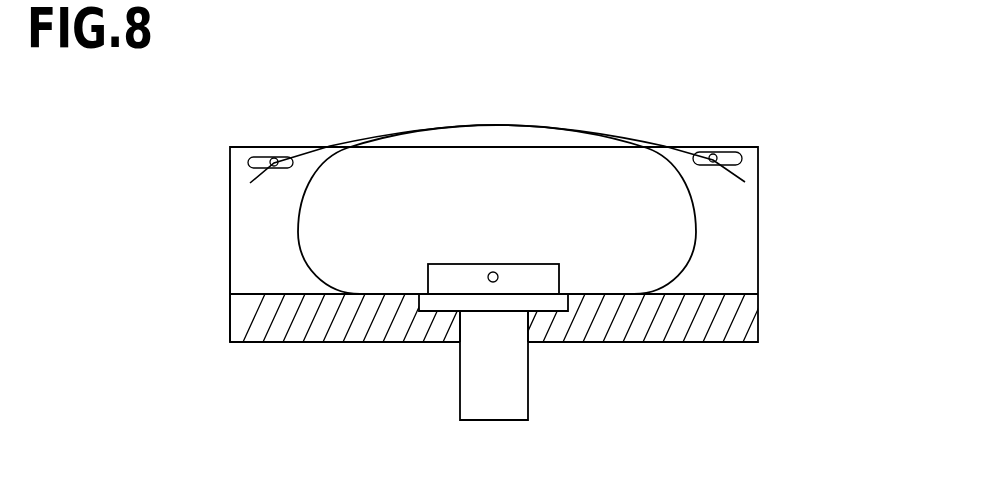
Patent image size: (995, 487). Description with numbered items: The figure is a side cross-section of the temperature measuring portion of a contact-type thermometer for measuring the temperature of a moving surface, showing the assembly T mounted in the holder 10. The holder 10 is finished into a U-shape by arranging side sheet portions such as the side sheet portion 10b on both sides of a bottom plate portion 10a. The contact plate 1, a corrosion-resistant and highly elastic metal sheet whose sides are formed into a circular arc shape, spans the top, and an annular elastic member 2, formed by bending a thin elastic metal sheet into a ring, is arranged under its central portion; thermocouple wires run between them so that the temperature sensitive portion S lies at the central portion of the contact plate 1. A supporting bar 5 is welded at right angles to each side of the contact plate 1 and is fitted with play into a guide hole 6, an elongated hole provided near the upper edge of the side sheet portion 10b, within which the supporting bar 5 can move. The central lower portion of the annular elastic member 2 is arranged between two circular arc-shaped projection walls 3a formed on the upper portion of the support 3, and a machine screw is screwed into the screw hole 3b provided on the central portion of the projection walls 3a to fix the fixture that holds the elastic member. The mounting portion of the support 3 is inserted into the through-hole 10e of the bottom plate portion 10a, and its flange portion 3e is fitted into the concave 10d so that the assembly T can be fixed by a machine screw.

The contact plate 1 is at (628, 128).
The annular elastic member 2 is at (313, 170).
The support 3 is at (517, 388).
The projection wall 3a is at (428, 273).
The screw hole 3b is at (493, 272).
The flange portion 3e is at (553, 302).
The supporting bar 5 is at (274, 167).
The guide hole 6 is at (258, 157).
The holder 10 is at (740, 264).
The bottom plate portion 10a is at (737, 321).
The side sheet portion 10b is at (245, 265).
The concave 10d is at (448, 340).
The through-hole 10e is at (453, 336).
The temperature sensitive portion S is at (495, 126).
The assembly T is at (722, 212).